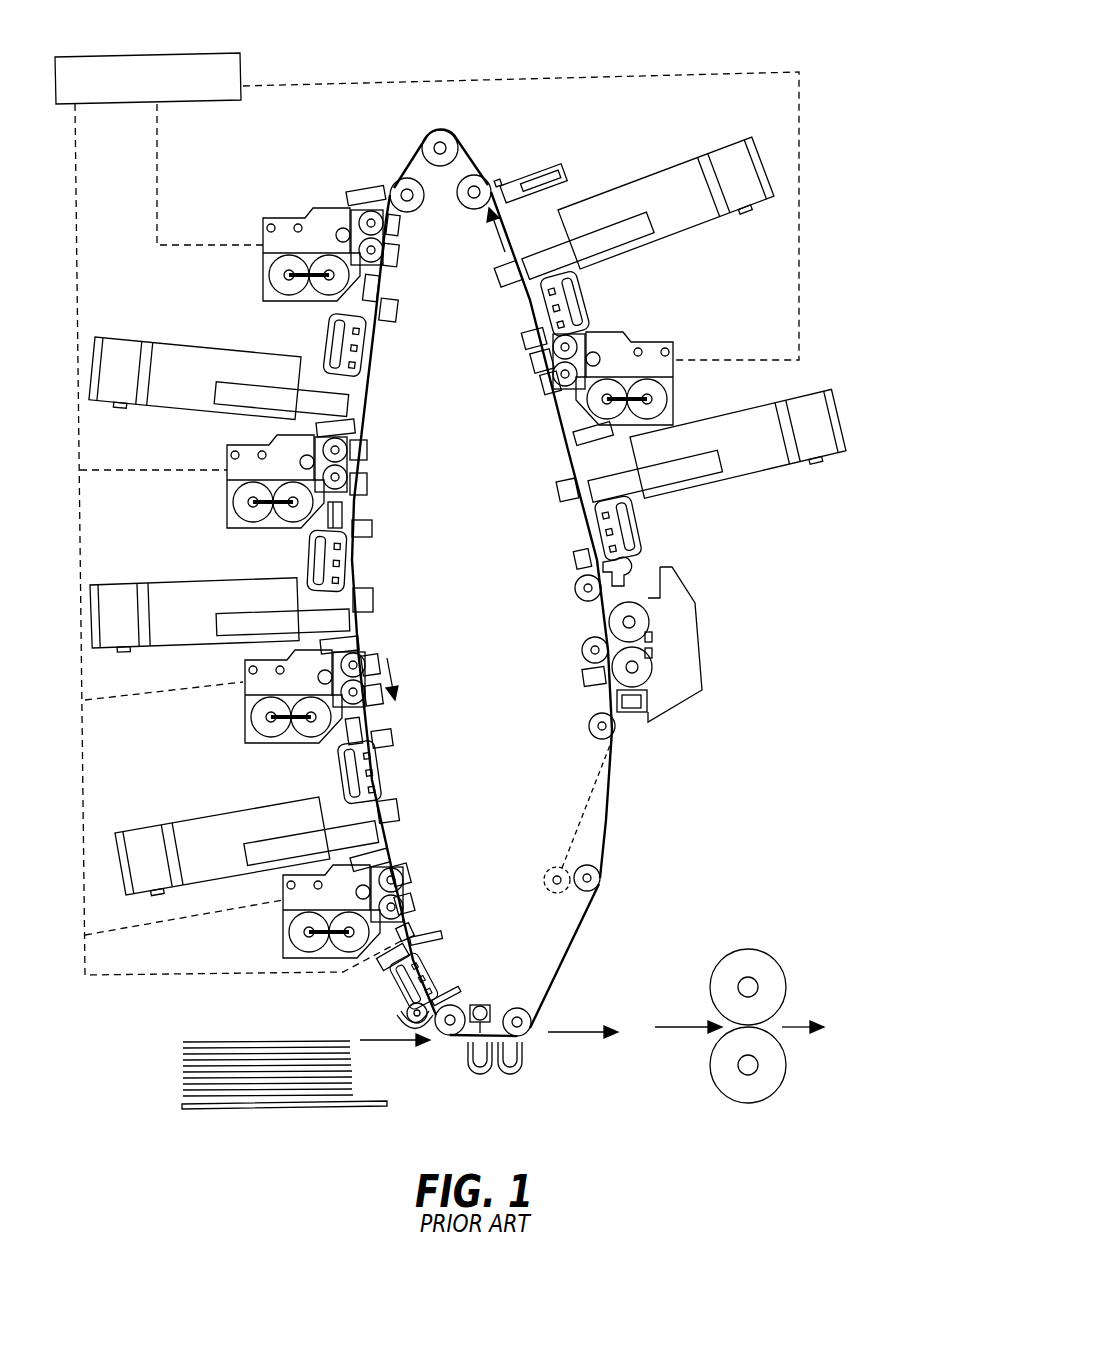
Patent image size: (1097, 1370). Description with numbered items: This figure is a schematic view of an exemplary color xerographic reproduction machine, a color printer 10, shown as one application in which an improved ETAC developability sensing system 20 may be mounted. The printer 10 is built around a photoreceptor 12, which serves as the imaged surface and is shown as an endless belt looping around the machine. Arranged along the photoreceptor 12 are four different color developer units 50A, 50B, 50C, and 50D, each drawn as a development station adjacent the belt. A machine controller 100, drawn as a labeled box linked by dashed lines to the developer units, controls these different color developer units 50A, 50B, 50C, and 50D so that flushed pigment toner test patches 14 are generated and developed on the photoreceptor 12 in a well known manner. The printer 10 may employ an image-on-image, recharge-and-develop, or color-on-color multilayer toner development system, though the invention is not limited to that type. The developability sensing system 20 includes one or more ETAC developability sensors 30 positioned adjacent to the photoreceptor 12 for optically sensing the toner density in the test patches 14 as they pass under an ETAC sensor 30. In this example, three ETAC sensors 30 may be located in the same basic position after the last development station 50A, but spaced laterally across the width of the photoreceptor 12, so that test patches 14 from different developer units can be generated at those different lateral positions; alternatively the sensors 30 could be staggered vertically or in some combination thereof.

The color printer 10 is at (628, 68).
The photoreceptor 12 is at (576, 936).
The toner test patches 14 is at (405, 922).
The developability sensing system 20 is at (148, 977).
The ETAC developability sensor 30 is at (436, 928).
The developer unit 50A is at (320, 960).
The developer unit 50B is at (272, 745).
The developer unit 50C is at (265, 528).
The developer unit 50D is at (283, 303).
The machine controller 100 is at (241, 68).